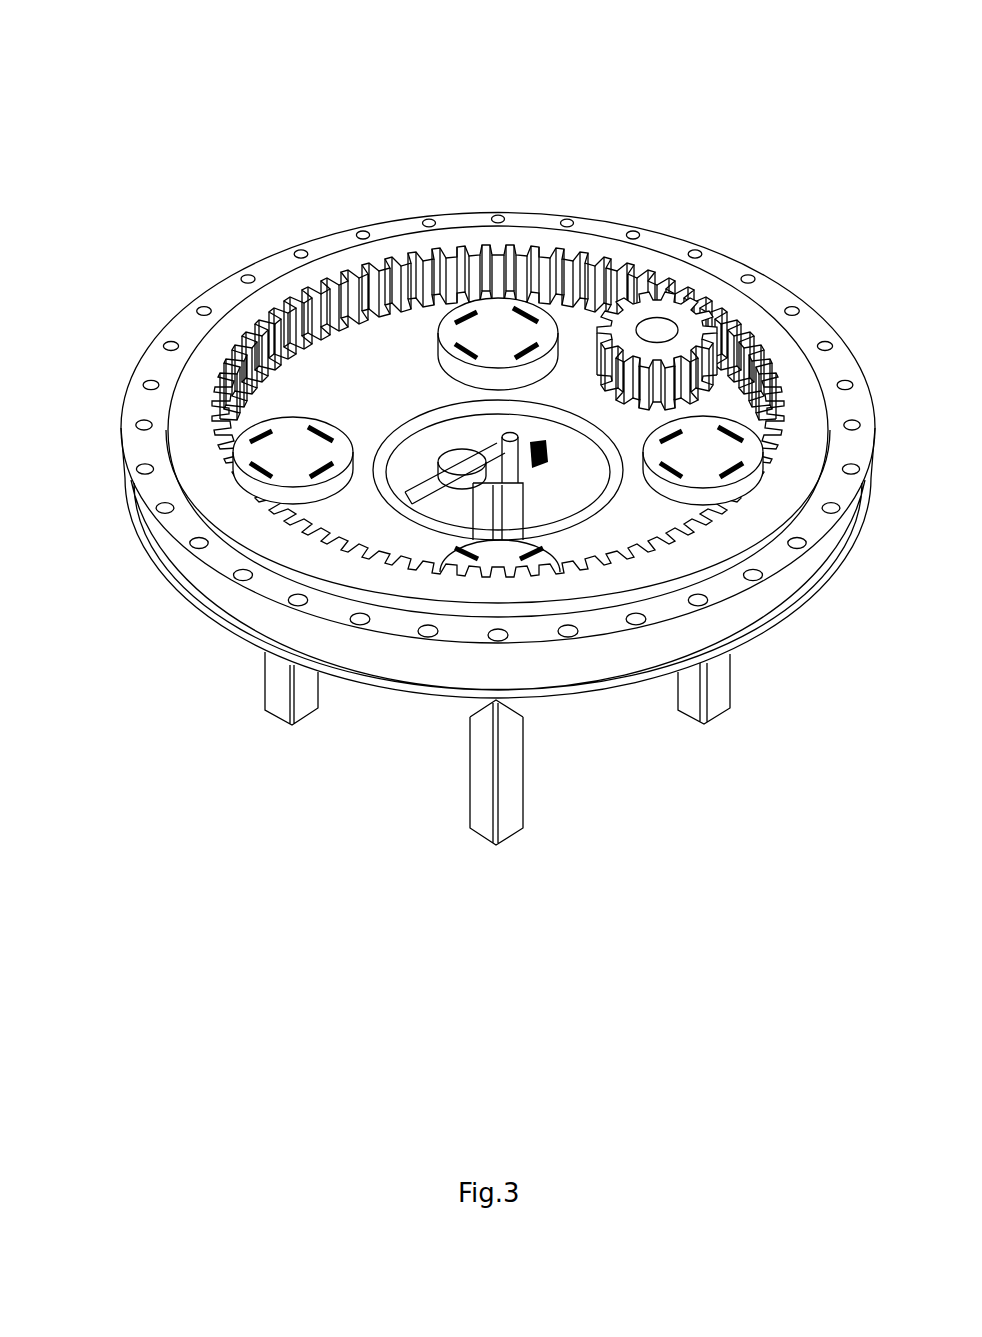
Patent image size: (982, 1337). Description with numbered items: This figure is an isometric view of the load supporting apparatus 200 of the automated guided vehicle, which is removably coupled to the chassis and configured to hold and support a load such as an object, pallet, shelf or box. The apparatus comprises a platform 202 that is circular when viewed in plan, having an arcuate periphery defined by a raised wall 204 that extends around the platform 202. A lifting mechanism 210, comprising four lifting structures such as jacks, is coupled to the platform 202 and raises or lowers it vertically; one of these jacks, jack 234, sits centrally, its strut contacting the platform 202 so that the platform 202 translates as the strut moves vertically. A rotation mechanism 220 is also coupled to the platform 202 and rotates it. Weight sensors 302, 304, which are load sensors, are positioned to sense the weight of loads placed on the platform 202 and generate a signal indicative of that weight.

The load supporting apparatus 200 is at (290, 112).
The platform 202 is at (336, 382).
The raised wall 204 is at (210, 482).
The lifting mechanism 210 is at (247, 738).
The rotation mechanism 220 is at (692, 272).
The jack 234 is at (505, 437).
The weight sensor 302 is at (293, 460).
The weight sensor 304 is at (492, 328).